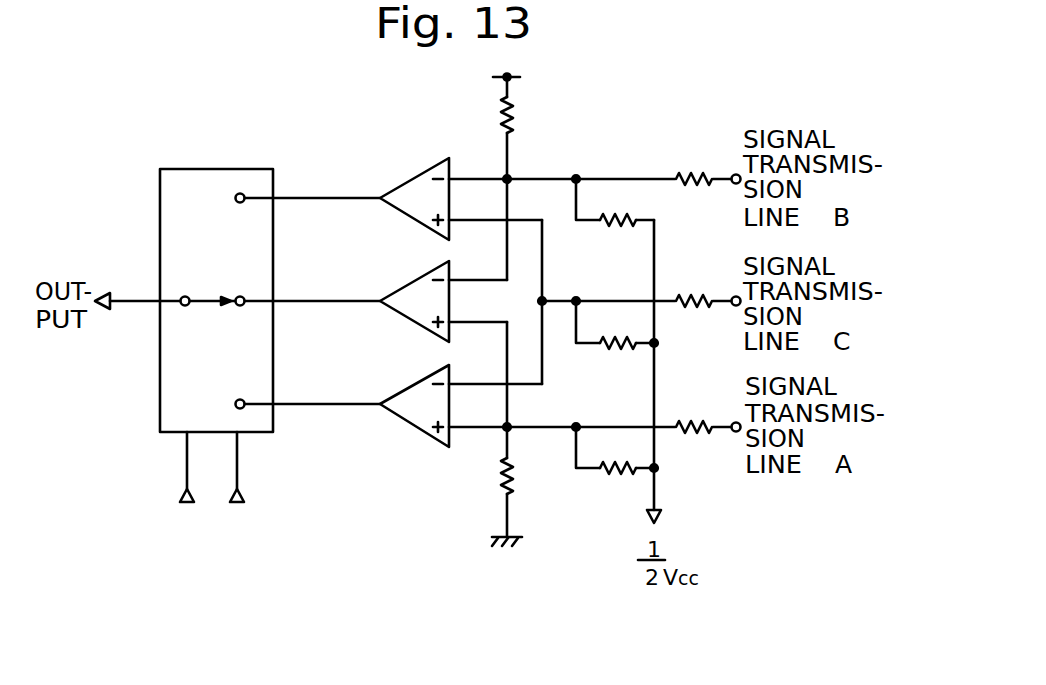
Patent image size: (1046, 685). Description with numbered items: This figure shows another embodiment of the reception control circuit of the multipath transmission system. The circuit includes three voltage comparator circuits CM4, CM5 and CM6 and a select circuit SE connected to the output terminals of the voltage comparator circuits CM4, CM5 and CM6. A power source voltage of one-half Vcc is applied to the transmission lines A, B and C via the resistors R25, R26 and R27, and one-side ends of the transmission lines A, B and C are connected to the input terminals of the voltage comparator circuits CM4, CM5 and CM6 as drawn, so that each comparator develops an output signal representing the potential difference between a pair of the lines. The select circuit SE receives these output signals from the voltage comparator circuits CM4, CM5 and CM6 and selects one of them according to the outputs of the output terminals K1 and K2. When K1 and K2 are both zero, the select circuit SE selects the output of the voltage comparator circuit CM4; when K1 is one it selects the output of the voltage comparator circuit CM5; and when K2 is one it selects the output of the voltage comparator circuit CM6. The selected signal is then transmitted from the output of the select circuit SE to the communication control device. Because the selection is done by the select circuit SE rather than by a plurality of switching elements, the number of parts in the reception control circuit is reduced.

The select circuit SE is at (220, 168).
The voltage comparator circuit CM4 is at (393, 298).
The voltage comparator circuit CM5 is at (403, 183).
The voltage comparator circuit CM6 is at (397, 417).
The resistor R25 is at (615, 202).
The resistor R26 is at (617, 325).
The resistor R27 is at (617, 450).
The output terminal K1 is at (191, 482).
The output terminal K2 is at (241, 482).